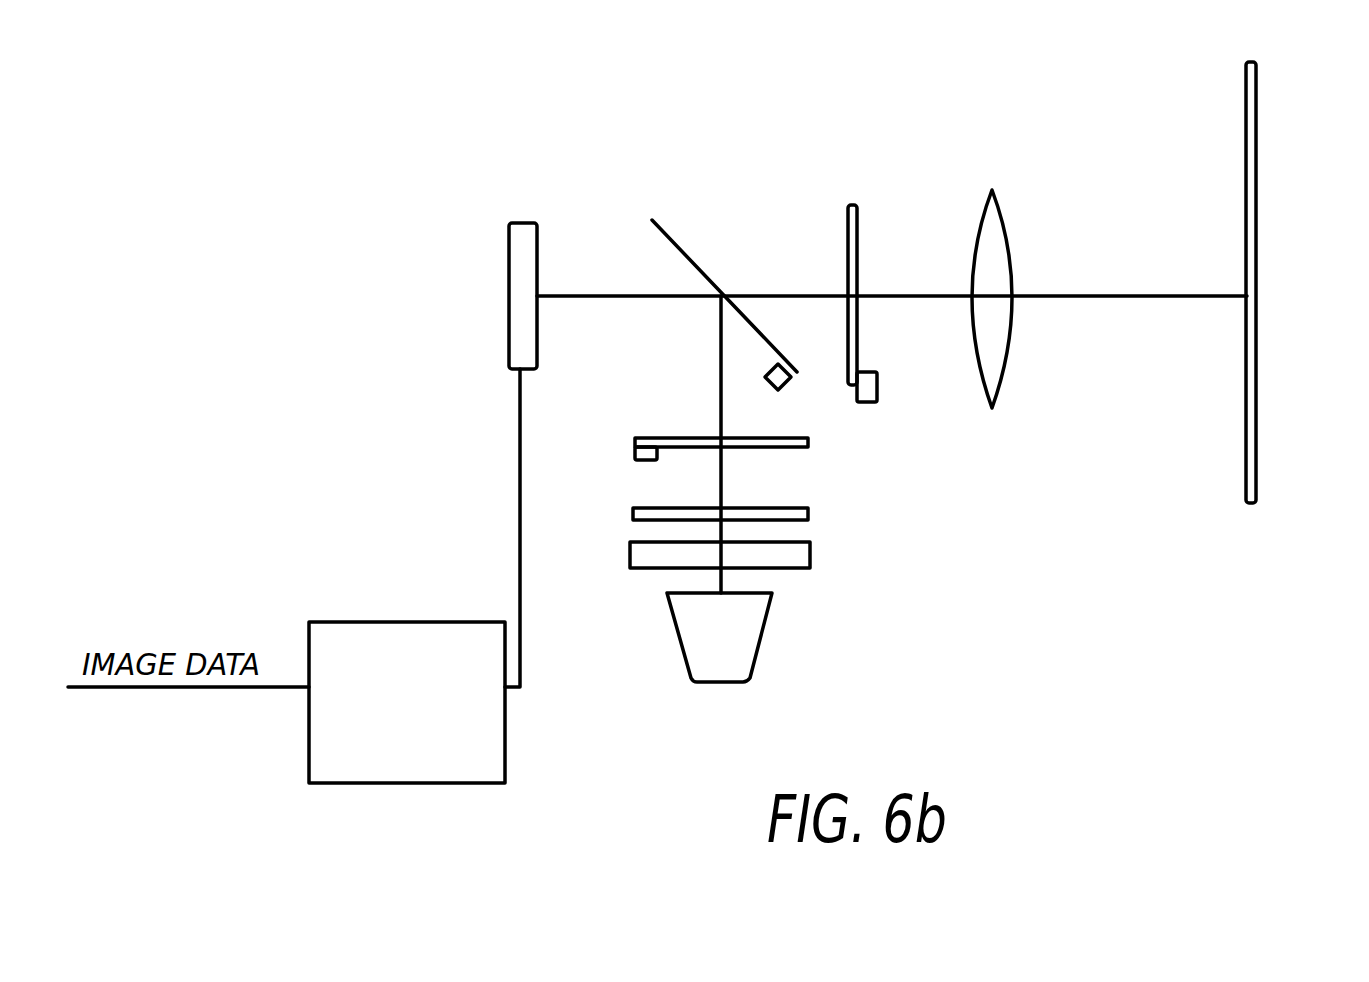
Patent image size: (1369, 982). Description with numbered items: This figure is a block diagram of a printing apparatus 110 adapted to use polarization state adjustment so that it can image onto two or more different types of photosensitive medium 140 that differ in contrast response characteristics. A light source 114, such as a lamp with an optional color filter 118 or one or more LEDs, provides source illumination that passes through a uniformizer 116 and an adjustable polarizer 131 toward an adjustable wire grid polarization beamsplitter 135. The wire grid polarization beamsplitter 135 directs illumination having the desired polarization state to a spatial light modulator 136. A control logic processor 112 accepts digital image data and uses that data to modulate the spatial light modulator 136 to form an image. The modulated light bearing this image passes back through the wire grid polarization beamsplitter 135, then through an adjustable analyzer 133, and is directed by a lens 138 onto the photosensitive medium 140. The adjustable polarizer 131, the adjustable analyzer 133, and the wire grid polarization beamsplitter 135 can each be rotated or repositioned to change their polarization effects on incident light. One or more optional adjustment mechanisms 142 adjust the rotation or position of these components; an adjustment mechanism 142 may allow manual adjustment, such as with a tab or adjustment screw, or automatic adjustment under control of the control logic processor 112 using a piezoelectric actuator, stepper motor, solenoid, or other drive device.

The printing apparatus 110 is at (1198, 577).
The control logic processor 112 is at (398, 622).
The light source 114 is at (757, 650).
The uniformizer 116 is at (810, 555).
The color filter 118 is at (808, 514).
The adjustable polarizer 131 is at (678, 437).
The adjustable analyzer 133 is at (860, 218).
The adjustable wire grid polarization beamsplitter 135 is at (690, 258).
The spatial light modulator 136 is at (508, 315).
The lens 138 is at (998, 212).
The photosensitive medium 140 is at (1257, 112).
The adjustment mechanism 142 is at (792, 385).